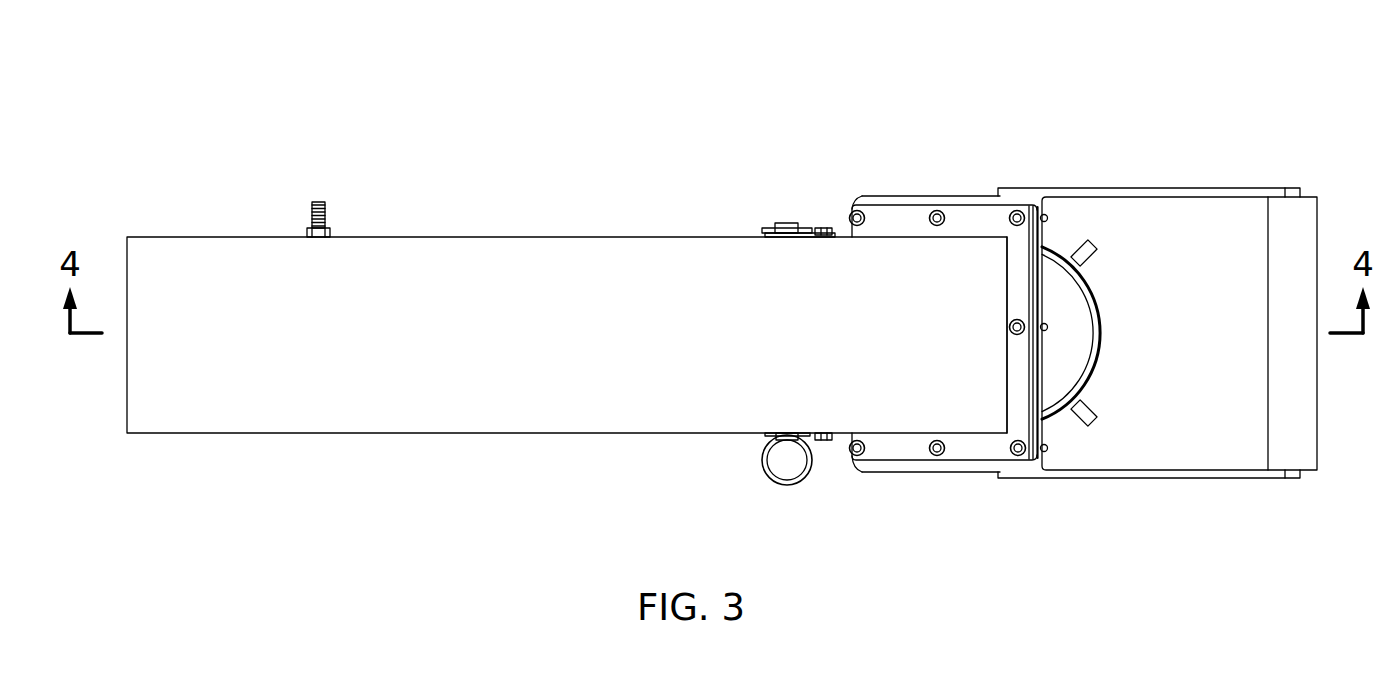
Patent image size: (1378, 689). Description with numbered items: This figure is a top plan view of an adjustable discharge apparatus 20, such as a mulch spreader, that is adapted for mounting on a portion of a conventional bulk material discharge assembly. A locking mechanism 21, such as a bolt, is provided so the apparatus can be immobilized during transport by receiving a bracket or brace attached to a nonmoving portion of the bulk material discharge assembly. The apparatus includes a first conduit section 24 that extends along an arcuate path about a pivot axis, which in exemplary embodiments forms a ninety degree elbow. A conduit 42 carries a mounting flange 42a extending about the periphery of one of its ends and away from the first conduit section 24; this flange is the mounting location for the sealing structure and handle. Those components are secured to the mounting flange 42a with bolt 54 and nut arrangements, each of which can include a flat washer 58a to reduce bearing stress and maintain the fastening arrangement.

The adjustable discharge apparatus 20 is at (782, 104).
The locking mechanism 21 is at (318, 202).
The first conduit section 24 is at (1094, 300).
The conduit 42 is at (540, 283).
The mounting flange 42a is at (1015, 421).
The bolt 54 is at (1015, 347).
The flat washer 58a is at (1018, 327).